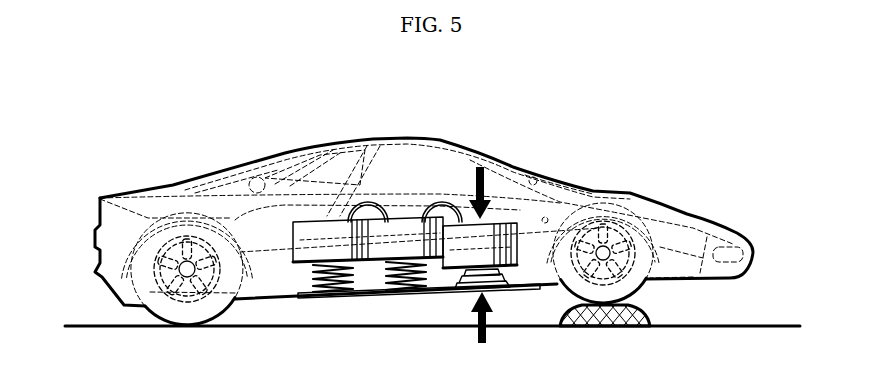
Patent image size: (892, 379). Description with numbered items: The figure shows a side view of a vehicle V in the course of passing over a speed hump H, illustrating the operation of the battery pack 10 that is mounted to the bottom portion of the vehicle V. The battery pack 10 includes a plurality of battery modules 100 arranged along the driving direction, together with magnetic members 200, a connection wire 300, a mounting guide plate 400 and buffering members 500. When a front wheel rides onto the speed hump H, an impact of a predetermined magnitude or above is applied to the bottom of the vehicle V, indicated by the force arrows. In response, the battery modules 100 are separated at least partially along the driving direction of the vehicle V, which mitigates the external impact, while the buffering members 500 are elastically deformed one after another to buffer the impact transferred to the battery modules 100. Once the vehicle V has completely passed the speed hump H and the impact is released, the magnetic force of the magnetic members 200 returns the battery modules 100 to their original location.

The vehicle V is at (222, 134).
The battery pack 10 is at (294, 285).
The battery module 100 is at (501, 226).
The magnetic member 200 is at (450, 218).
The connection wire 300 is at (367, 220).
The mounting guide plate 400 is at (518, 286).
The buffering member 500 is at (360, 294).
The speed hump H is at (577, 327).